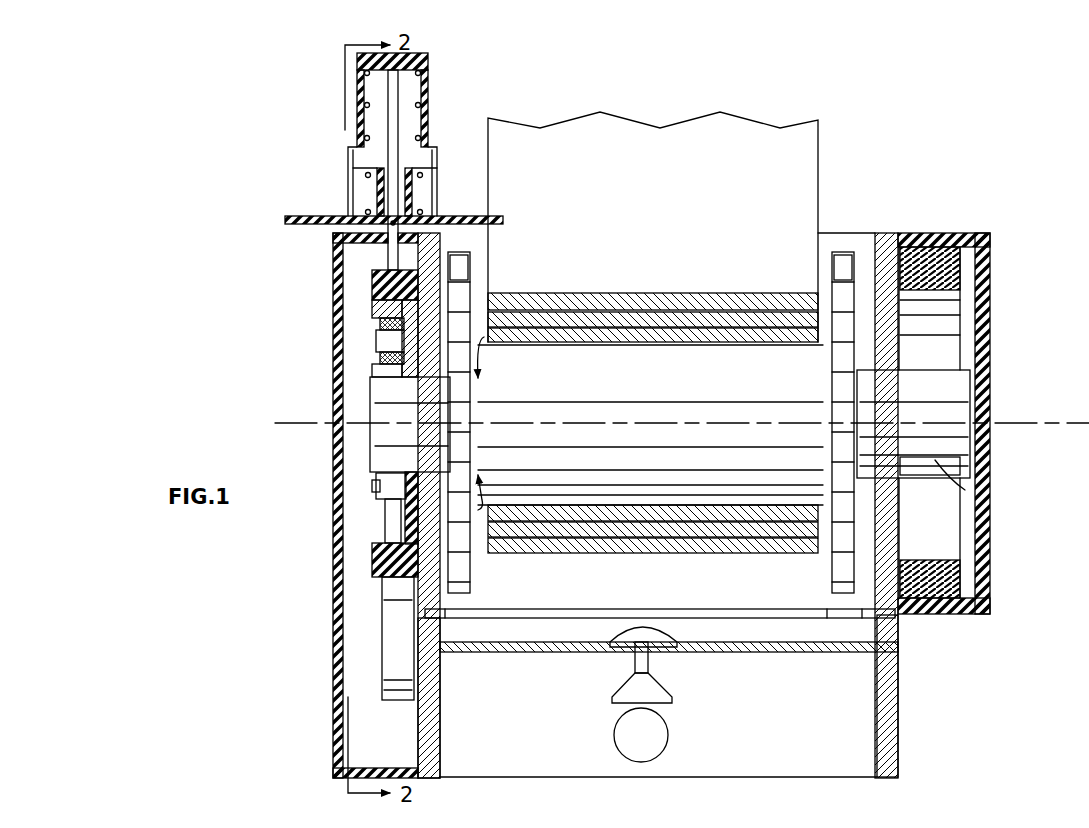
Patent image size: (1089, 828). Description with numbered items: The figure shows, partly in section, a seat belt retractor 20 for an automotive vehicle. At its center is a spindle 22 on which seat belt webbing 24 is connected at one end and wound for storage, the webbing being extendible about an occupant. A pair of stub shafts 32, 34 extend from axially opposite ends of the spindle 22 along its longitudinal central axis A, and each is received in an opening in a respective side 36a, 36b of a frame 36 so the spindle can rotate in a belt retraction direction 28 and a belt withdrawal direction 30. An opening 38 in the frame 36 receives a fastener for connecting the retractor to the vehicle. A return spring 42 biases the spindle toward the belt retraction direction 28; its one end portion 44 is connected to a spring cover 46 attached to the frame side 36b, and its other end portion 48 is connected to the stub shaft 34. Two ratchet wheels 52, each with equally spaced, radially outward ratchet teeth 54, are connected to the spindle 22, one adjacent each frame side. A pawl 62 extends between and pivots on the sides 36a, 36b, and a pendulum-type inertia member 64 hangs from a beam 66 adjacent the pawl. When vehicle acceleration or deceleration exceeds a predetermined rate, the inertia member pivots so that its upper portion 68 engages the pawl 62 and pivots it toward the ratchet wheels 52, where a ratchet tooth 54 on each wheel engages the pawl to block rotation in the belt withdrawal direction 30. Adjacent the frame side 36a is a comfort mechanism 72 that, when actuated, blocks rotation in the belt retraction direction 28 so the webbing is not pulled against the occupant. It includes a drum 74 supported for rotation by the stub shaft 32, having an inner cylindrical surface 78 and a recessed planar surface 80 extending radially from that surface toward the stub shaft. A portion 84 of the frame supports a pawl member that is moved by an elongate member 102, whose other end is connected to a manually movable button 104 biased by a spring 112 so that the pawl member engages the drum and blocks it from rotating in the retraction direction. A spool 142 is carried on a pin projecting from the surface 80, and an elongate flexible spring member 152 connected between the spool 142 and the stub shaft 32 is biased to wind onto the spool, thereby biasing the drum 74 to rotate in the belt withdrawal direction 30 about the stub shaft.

The seat belt retractor 20 is at (886, 150).
The spindle 22 is at (688, 396).
The seat belt webbing 24 is at (620, 135).
The belt retraction direction 28 is at (483, 492).
The belt withdrawal direction 30 is at (484, 348).
The stub shaft 32 is at (395, 413).
The stub shaft 34 is at (930, 393).
The frame 36 is at (830, 757).
The frame side 36a is at (432, 738).
The frame side 36b is at (886, 712).
The opening 38 is at (662, 722).
The return spring 42 is at (940, 278).
The end portion 44 is at (932, 238).
The spring cover 46 is at (988, 260).
The end portion 48 is at (978, 498).
The ratchet wheel 52 is at (462, 575).
The ratchet teeth 54 is at (460, 300).
The pawl 62 is at (740, 612).
The inertia member 64 is at (632, 688).
The beam 66 is at (805, 652).
The upper portion 68 is at (642, 628).
The comfort mechanism 72 is at (325, 524).
The drum 74 is at (366, 286).
The inner cylindrical surface 78 is at (375, 318).
The recessed planar surface 80 is at (410, 520).
The frame portion 84 is at (340, 702).
The elongate member 102 is at (392, 157).
The button 104 is at (428, 62).
The spring 112 is at (357, 112).
The spool 142 is at (380, 324).
The spring member 152 is at (390, 370).
The longitudinal central axis A is at (1030, 428).